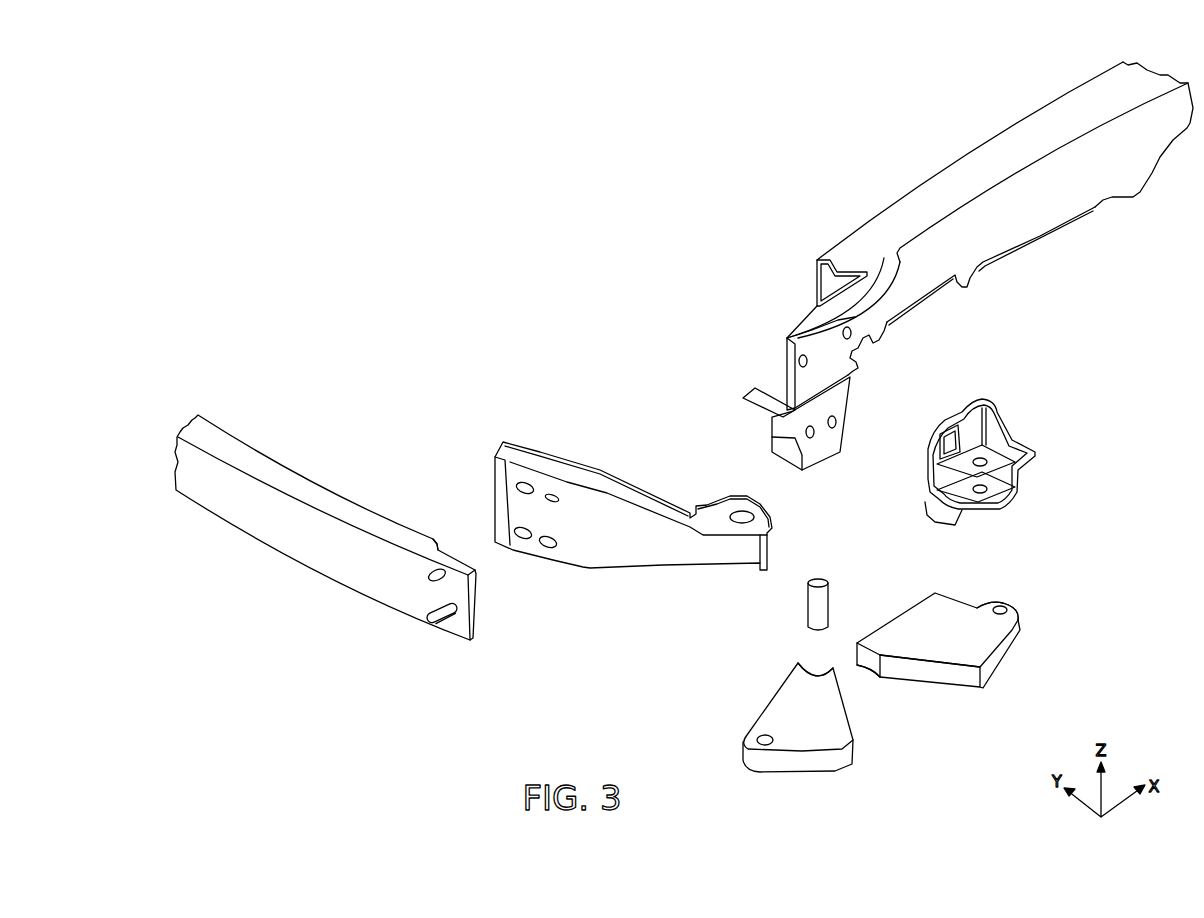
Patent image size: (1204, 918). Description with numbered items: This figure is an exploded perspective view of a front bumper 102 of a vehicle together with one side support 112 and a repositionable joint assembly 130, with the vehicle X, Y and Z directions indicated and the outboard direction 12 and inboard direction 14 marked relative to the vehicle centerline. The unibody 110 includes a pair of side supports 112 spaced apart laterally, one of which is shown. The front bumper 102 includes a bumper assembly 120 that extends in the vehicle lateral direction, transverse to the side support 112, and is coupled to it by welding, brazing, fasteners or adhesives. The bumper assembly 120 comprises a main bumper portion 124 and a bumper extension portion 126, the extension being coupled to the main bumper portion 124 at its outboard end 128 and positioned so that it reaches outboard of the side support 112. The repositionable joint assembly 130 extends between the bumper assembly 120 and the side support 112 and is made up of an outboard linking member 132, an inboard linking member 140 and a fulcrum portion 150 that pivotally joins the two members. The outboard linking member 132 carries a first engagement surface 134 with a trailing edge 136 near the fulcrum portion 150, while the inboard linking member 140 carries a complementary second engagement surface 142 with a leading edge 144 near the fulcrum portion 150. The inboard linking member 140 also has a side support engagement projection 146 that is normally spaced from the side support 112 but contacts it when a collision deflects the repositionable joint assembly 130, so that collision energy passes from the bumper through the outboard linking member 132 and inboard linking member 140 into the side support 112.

The unibody 110 is at (250, 212).
The bumper assembly 120 is at (366, 367).
The front bumper 102 is at (199, 534).
The inboard direction 14 is at (183, 576).
The outboard direction 12 is at (276, 630).
The main bumper portion 124 is at (228, 434).
The outboard end 128 is at (445, 533).
The bumper extension portion 126 is at (645, 565).
The side support 112 is at (876, 185).
The fulcrum portion 150 is at (818, 579).
The outboard linking member 132 is at (786, 725).
The first engagement surface 134 is at (853, 713).
The trailing edge 136 is at (818, 673).
The second engagement surface 142 is at (963, 678).
The leading edge 144 is at (883, 648).
The side support engagement projection 146 is at (937, 595).
The inboard linking member 140 is at (1064, 605).
The repositionable joint assembly 130 is at (1028, 703).